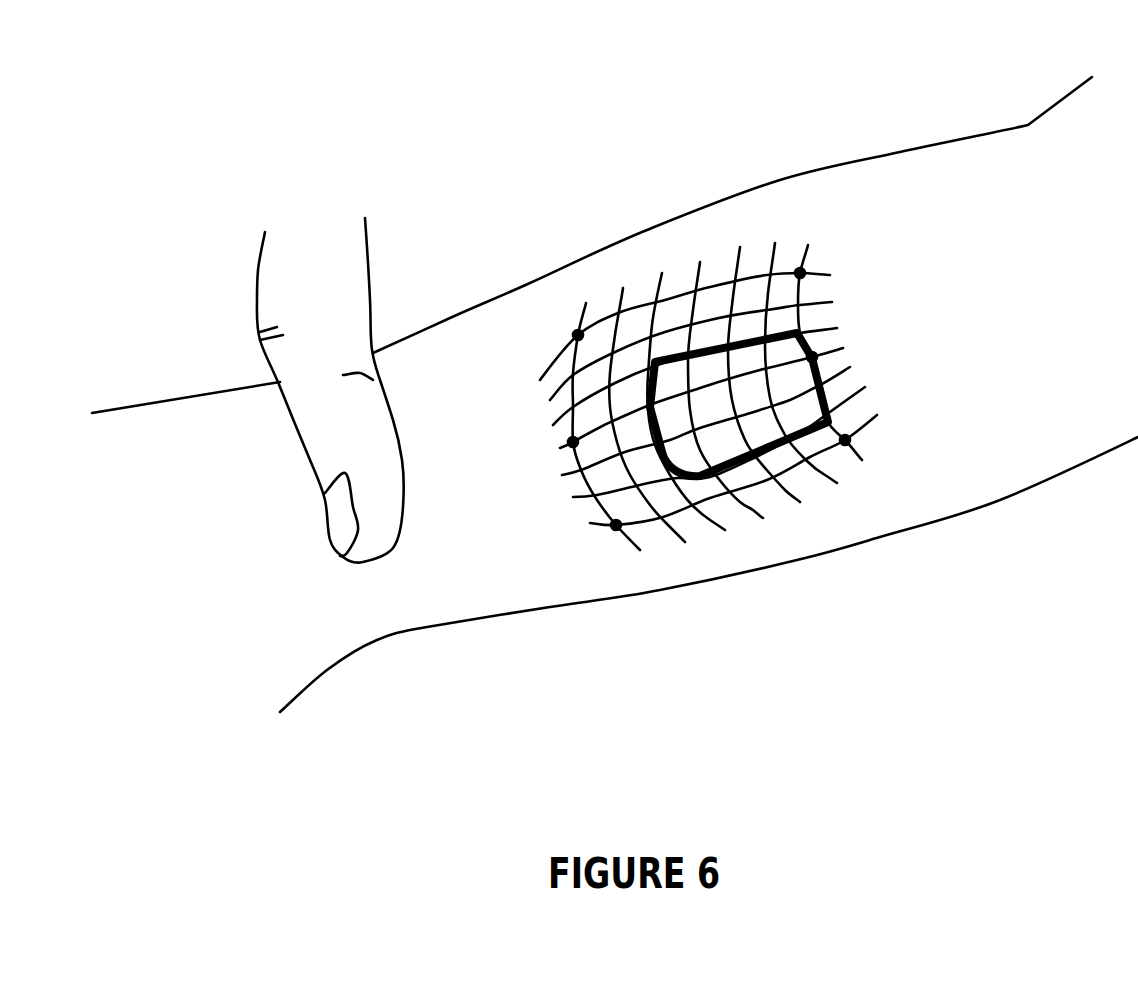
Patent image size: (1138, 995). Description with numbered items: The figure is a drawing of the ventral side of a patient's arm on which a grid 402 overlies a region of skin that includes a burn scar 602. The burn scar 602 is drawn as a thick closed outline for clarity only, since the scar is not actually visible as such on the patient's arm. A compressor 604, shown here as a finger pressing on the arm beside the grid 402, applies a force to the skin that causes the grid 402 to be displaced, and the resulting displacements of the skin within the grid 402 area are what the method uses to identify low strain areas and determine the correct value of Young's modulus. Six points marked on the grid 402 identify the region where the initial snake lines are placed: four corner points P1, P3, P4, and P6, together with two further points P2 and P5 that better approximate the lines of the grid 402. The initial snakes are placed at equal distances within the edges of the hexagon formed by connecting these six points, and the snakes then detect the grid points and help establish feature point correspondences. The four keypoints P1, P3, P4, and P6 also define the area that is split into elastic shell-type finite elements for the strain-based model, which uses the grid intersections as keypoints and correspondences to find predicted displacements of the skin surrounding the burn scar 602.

The grid 402 is at (823, 210).
The compressor 604 is at (357, 562).
The burn scar 602 is at (812, 365).
The corner point P1 is at (616, 525).
The point P2 is at (573, 442).
The corner point P3 is at (578, 335).
The corner point P4 is at (845, 440).
The point P5 is at (812, 357).
The corner point P6 is at (800, 273).